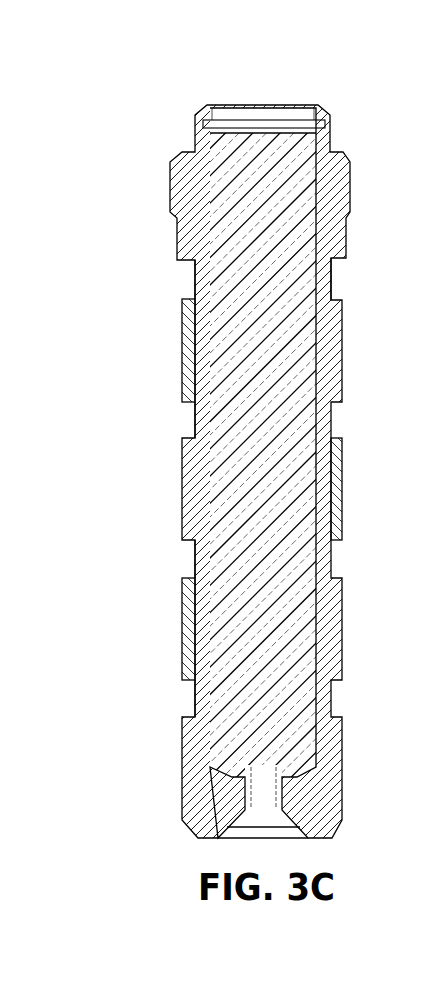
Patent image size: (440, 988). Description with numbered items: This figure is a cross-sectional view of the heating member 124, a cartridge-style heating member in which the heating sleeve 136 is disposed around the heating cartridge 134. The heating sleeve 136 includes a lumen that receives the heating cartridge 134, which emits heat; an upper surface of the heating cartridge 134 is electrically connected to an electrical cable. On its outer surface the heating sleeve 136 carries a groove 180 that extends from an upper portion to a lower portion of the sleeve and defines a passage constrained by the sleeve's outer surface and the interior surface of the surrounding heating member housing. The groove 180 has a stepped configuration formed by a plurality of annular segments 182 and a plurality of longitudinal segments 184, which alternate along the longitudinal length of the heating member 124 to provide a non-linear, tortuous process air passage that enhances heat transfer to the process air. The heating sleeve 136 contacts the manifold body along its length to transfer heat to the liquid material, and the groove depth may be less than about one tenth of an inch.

The heating member 124 is at (220, 437).
The heating cartridge 134 is at (287, 377).
The heating sleeve 136 is at (177, 183).
The groove 180 is at (346, 276).
The annular segments 182 is at (195, 279).
The longitudinal segments 184 is at (188, 373).